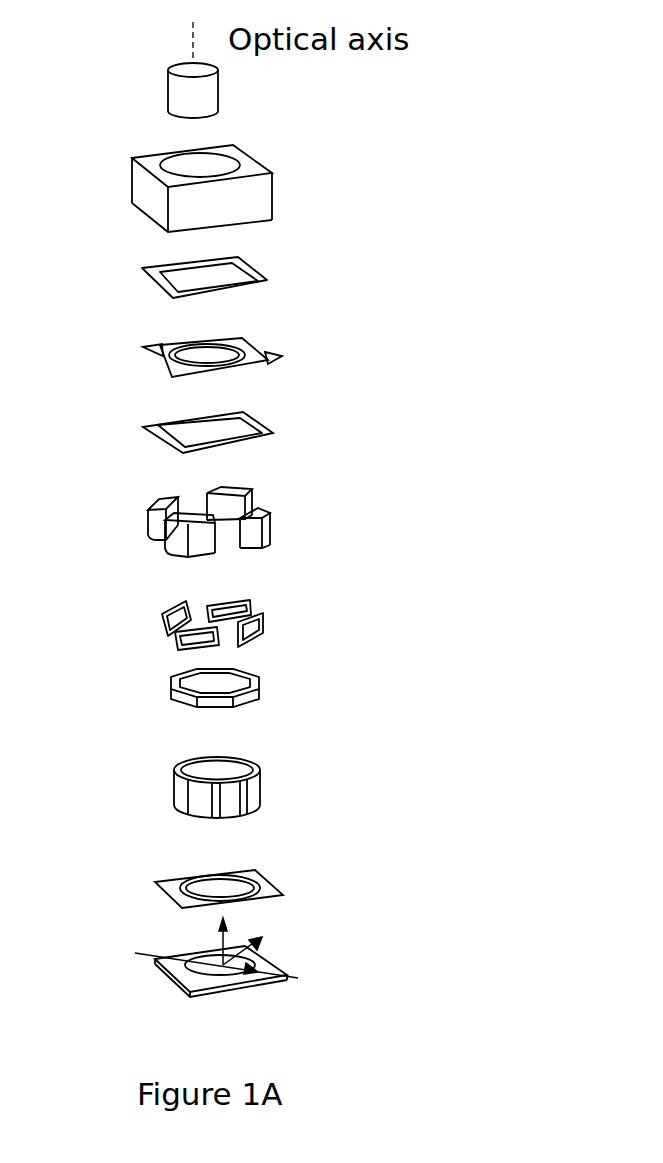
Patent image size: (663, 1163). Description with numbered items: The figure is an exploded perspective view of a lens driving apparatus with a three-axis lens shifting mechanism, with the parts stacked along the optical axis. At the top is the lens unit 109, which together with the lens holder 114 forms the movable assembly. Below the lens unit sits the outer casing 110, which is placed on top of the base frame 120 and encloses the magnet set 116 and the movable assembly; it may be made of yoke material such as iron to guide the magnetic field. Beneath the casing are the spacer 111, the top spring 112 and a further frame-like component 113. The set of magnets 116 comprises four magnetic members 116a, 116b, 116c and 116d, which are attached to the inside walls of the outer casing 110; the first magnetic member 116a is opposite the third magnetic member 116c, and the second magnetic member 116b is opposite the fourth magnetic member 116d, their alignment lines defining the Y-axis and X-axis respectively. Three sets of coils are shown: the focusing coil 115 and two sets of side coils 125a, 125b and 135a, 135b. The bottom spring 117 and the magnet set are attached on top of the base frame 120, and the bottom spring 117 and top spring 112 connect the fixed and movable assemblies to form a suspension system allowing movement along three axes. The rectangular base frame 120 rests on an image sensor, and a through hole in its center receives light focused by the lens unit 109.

The lens unit 109 is at (218, 93).
The outer casing 110 is at (272, 195).
The spacer 111 is at (265, 278).
The top spring 112 is at (262, 358).
The frame 113 is at (270, 435).
The lens holder 114 is at (255, 786).
The focusing coil 115 is at (250, 688).
The set of magnets 116 is at (288, 515).
The first magnetic member 116a is at (156, 501).
The second magnetic member 116b is at (178, 538).
The third magnetic member 116c is at (263, 526).
The fourth magnetic member 116d is at (238, 500).
The bottom spring 117 is at (268, 880).
The base frame 120 is at (172, 980).
The side coil 125a is at (175, 645).
The side coil 125b is at (247, 606).
The side coil 135a is at (163, 620).
The side coil 135b is at (263, 620).